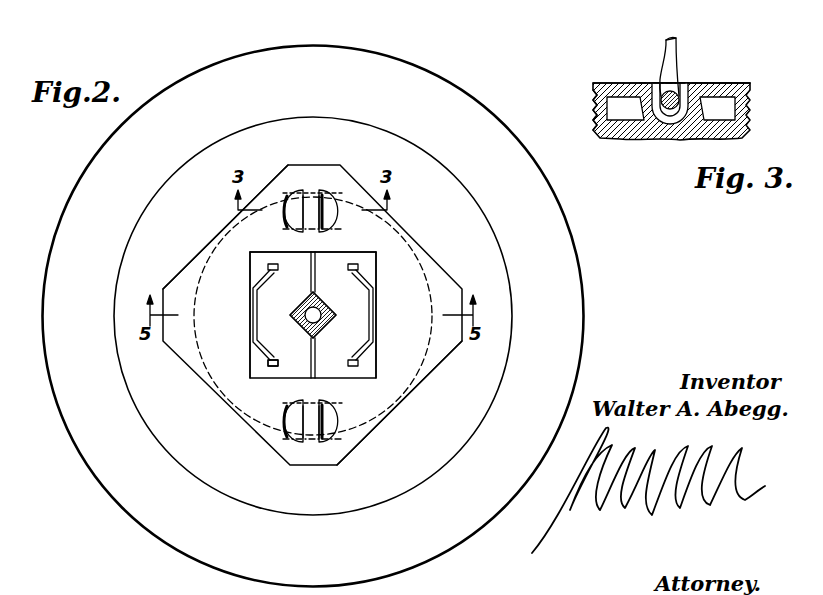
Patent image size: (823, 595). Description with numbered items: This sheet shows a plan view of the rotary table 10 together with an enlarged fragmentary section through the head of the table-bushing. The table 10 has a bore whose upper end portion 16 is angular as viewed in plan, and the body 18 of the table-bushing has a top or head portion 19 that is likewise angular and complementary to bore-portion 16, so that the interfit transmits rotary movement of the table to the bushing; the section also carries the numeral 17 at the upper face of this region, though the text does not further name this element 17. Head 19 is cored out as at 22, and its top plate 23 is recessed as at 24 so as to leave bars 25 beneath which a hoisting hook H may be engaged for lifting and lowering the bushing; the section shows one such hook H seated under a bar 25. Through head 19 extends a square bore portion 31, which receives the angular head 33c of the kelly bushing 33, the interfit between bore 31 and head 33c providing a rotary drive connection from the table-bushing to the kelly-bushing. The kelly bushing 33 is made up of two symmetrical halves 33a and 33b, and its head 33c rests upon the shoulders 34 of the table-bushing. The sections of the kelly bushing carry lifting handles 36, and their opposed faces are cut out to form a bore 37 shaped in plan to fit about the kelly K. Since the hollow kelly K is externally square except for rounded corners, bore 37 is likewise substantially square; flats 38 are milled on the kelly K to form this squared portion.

In FIG. 2, the rotary table 10 is at (468, 98).
In FIG. 3, the rotary table 10 is at (593, 108).
In FIG. 2, the upper end portion of the table-bore 16 is at (441, 282).
In FIG. 3, the upper end portion of the table-bore 16 is at (752, 112).
In FIG. 2, the top surface of base 17 is at (183, 289).
In FIG. 3, the top surface of base 17 is at (617, 83).
In FIG. 2, the head portion of body 19 is at (437, 350).
In FIG. 3, the cored-out portion of head 22 is at (718, 106).
In FIG. 3, the top plate of the head 23 is at (726, 83).
In FIG. 2, the recess in top plate 24 is at (328, 196).
In FIG. 3, the recess in top plate 24 is at (653, 93).
In FIG. 2, the bar 25 is at (314, 234).
In FIG. 3, the bar 25 is at (666, 90).
In FIG. 3, the body 18 is at (652, 140).
In FIG. 3, the hoisting hook H is at (690, 52).
In FIG. 2, the bore portion 31 is at (256, 360).
In FIG. 2, the kelly bushing 33 is at (303, 366).
In FIG. 2, the kelly bushing half 33a is at (256, 266).
In FIG. 2, the kelly bushing half 33b is at (360, 316).
In FIG. 2, the angular head of kelly bushing 33c is at (375, 258).
In FIG. 2, the shoulders of the table-bushing 34 is at (368, 265).
In FIG. 2, the lifting handles 36 is at (252, 296).
In FIG. 2, the kelly bushing bore 37 is at (305, 306).
In FIG. 2, the flats 38 is at (304, 318).
In FIG. 2, the kelly K is at (325, 304).